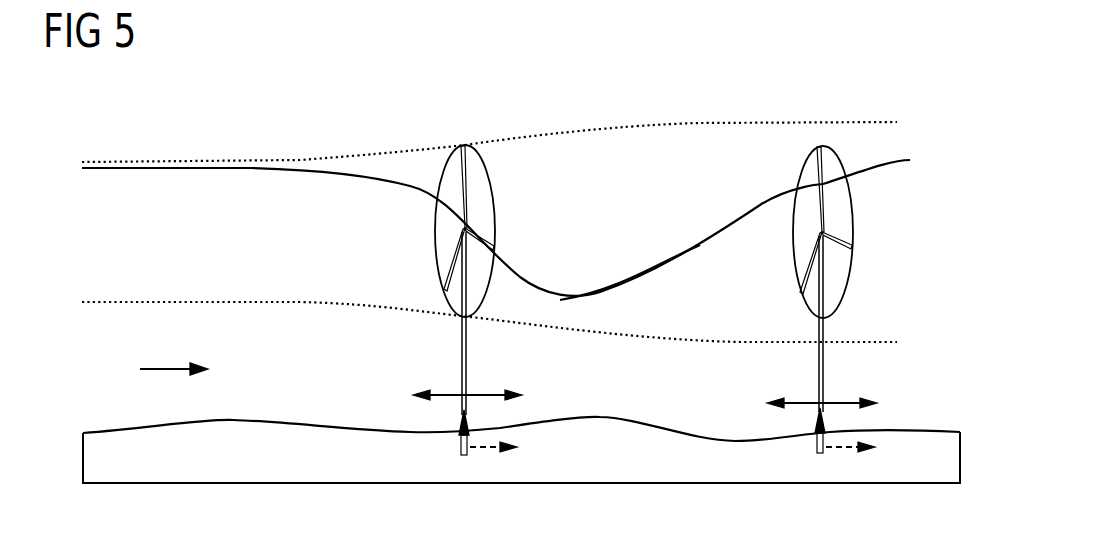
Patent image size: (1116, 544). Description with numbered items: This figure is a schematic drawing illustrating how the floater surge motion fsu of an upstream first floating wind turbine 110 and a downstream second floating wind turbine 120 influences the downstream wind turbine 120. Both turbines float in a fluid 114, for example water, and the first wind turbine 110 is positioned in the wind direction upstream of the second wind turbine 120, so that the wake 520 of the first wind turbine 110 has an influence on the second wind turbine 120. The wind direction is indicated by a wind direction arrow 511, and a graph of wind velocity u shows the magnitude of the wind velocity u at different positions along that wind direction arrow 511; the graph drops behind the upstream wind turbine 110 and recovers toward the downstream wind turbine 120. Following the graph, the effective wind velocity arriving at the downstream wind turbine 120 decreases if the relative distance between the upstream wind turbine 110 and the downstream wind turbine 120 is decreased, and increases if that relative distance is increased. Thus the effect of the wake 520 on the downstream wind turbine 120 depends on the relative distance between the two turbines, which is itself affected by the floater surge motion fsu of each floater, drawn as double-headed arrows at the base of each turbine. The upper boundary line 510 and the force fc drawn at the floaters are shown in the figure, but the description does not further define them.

The upper wake boundary / free stream line 510 is at (135, 148).
The wind direction arrow 511 is at (166, 365).
The wake 520 is at (612, 112).
The first floating wind turbine 110 is at (425, 165).
The second floating wind turbine 120 is at (765, 138).
The wind velocity u is at (679, 258).
The fluid 114 is at (248, 428).
The floater surge motion fsu is at (484, 394).
The control force fc is at (459, 440).